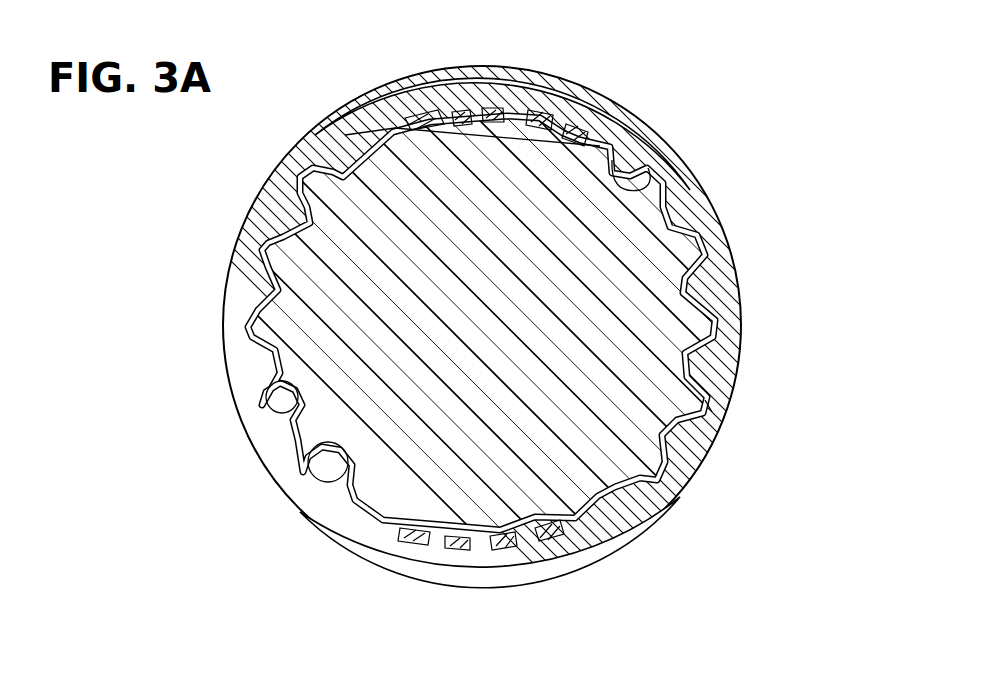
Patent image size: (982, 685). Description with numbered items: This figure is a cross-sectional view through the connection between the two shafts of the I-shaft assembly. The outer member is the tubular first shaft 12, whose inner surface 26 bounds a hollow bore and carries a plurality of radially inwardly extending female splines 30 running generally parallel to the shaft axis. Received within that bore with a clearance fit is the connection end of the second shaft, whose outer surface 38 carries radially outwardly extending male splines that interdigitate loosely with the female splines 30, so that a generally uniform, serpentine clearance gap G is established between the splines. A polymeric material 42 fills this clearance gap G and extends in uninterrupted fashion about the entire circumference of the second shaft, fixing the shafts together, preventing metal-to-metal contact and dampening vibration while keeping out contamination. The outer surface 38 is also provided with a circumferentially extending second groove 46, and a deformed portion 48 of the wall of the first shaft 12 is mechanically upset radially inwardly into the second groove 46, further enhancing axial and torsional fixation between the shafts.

The first shaft 12 is at (228, 212).
The inner surface 26 is at (680, 290).
The female splines 30 is at (648, 170).
The outer surface 38 is at (714, 326).
The polymeric material 42 is at (592, 140).
The second groove 46 is at (437, 122).
The deformed portion 48 is at (494, 88).
The clearance gap G is at (727, 413).